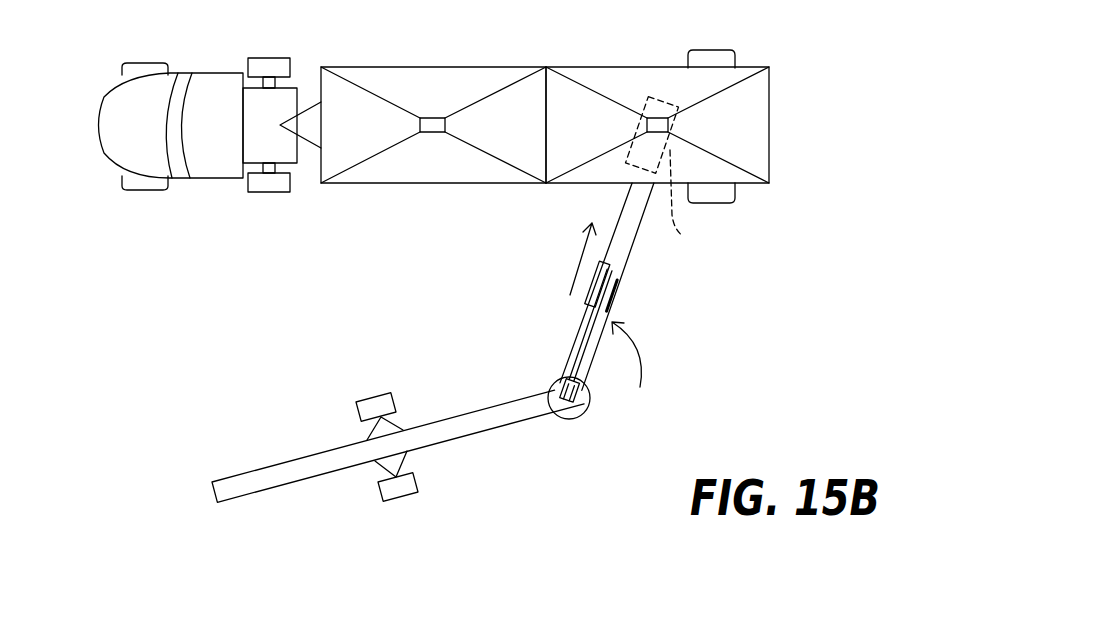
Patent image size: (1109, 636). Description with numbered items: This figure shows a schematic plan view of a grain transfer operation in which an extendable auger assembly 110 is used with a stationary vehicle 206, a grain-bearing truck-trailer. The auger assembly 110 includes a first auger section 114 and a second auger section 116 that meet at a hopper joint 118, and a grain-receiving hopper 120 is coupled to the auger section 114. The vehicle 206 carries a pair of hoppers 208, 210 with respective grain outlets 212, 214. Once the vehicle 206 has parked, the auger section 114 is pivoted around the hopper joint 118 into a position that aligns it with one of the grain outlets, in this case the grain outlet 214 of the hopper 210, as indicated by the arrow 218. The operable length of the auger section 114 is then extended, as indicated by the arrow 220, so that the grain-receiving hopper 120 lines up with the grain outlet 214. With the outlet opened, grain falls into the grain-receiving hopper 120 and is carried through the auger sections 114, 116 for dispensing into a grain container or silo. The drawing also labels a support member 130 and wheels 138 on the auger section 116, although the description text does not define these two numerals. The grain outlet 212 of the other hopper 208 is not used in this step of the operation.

The extendable auger assembly 110 is at (395, 355).
The auger section 114 is at (618, 300).
The auger section 116 is at (278, 472).
The hopper joint 118 is at (567, 426).
The grain-receiving hopper 120 is at (679, 176).
The axle struts 130 is at (385, 428).
The wheels 138 is at (373, 403).
The vehicle 206 is at (118, 148).
The hopper 208 is at (468, 78).
The hopper 210 is at (757, 93).
The grain outlet 212 is at (431, 108).
The grain outlet 214 is at (662, 105).
The arrow 218 is at (642, 360).
The arrow 220 is at (580, 257).